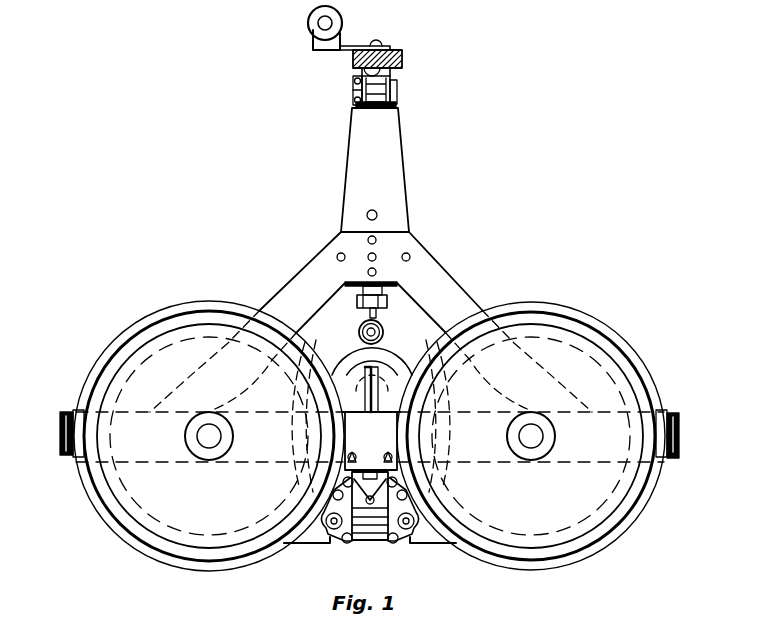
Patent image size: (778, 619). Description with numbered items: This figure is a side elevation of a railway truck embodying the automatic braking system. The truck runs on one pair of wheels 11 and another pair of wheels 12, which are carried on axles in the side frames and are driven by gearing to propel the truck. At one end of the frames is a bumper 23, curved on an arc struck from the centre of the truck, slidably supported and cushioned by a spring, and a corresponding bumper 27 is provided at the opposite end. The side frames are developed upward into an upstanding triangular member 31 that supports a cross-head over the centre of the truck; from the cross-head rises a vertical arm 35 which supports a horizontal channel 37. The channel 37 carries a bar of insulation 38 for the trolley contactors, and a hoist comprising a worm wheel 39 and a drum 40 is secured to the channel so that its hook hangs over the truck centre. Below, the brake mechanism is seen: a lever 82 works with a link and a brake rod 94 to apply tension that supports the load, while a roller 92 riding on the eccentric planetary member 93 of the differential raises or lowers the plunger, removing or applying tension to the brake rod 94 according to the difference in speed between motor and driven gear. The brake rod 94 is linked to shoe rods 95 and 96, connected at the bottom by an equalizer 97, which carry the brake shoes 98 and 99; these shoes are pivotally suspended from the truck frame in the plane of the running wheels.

The pair of wheels 11 is at (209, 436).
The pair of wheels 12 is at (531, 436).
The bumper 23 is at (60, 438).
The bumper 27 is at (679, 437).
The upstanding triangular member 31 is at (371, 362).
The vertical arm 35 is at (375, 170).
The horizontal channel 37 is at (392, 86).
The bar of insulation 38 is at (403, 56).
The worm wheel 39 is at (352, 96).
The drum 40 is at (397, 97).
The lever 82 is at (356, 304).
The roller 92 is at (383, 328).
The planetary member 93 is at (357, 352).
The brake rod 94 is at (382, 352).
The shoe rod 95 is at (340, 538).
The shoe rod 96 is at (393, 541).
The equalizer 97 is at (370, 541).
The brake shoe 98 is at (305, 544).
The brake shoe 99 is at (427, 544).